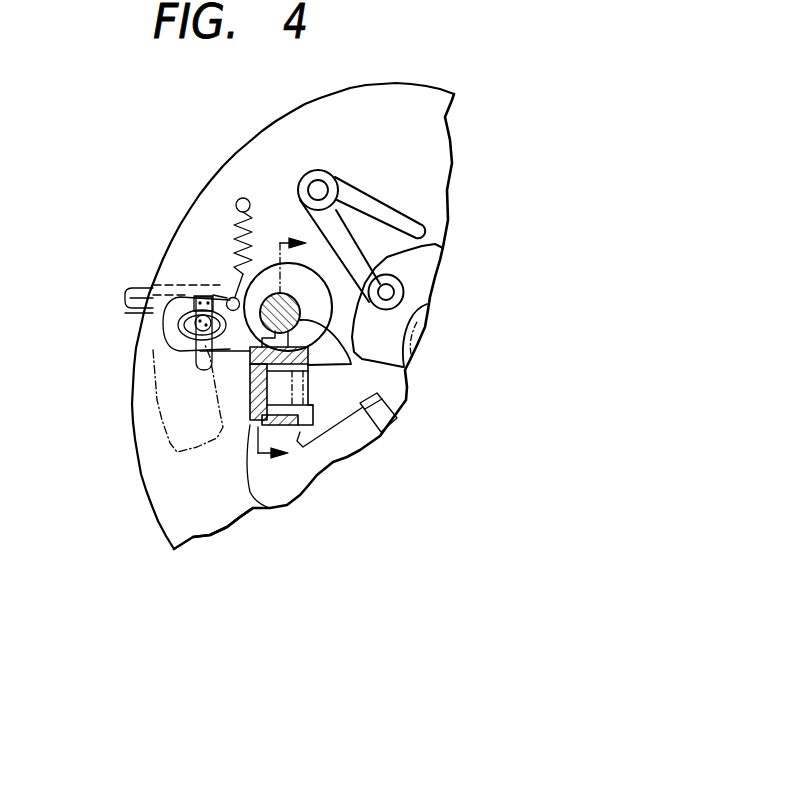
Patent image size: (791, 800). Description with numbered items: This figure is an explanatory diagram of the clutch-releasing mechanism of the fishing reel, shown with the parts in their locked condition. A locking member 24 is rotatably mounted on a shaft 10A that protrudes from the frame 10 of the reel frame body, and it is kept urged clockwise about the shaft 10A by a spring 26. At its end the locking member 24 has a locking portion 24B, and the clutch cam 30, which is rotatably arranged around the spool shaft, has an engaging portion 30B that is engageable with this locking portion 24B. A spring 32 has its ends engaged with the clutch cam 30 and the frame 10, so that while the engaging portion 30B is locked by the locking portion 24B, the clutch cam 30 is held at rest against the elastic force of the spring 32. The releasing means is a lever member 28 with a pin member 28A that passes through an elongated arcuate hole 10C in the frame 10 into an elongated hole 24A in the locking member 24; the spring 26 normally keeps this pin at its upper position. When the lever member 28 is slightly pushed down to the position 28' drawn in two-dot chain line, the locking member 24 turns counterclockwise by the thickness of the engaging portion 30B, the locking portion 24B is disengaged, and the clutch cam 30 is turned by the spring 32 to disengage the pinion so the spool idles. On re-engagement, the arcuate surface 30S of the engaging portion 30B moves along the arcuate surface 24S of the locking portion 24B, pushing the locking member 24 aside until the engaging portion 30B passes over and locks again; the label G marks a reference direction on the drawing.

The frame 10 is at (287, 130).
The shaft 10A is at (407, 370).
The elongated arcuate hole 10C is at (247, 350).
The locking member 24 is at (254, 278).
The elongated hole 24A is at (190, 325).
The locking portion 24B is at (305, 447).
The arcuate surface 24S is at (287, 506).
The spring 26 is at (243, 247).
The lever member 28 is at (142, 280).
The lever member in pushed-down position 28' is at (91, 310).
The pin member 28A is at (195, 297).
The clutch cam 30 is at (422, 275).
The engaging portion 30B is at (248, 380).
The arcuate surface 30S is at (250, 390).
The spring 32 is at (347, 242).
The axis G is at (296, 243).